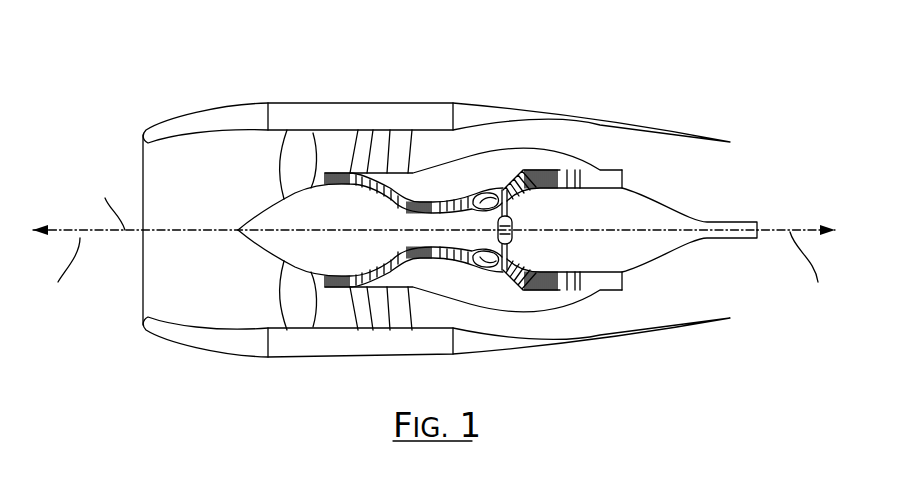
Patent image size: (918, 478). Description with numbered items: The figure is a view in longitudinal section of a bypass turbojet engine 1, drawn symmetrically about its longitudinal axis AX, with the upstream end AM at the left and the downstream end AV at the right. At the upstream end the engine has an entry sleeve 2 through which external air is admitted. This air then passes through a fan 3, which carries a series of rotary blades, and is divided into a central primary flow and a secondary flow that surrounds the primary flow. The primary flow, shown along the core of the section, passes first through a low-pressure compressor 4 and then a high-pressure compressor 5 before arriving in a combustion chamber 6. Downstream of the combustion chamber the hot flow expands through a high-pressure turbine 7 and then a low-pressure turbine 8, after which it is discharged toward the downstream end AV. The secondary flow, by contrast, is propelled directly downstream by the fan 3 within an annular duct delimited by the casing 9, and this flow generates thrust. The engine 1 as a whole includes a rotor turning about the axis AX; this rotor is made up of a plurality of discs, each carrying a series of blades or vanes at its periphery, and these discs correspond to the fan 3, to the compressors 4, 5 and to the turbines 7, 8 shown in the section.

The bypass turbojet engine 1 is at (150, 90).
The entry sleeve 2 is at (188, 230).
The fan 3 is at (288, 294).
The low-pressure compressor 4 is at (335, 165).
The high-pressure compressor 5 is at (425, 194).
The combustion chamber 6 is at (487, 184).
The high-pressure turbine 7 is at (518, 167).
The low-pressure turbine 8 is at (552, 155).
The casing 9 is at (385, 115).